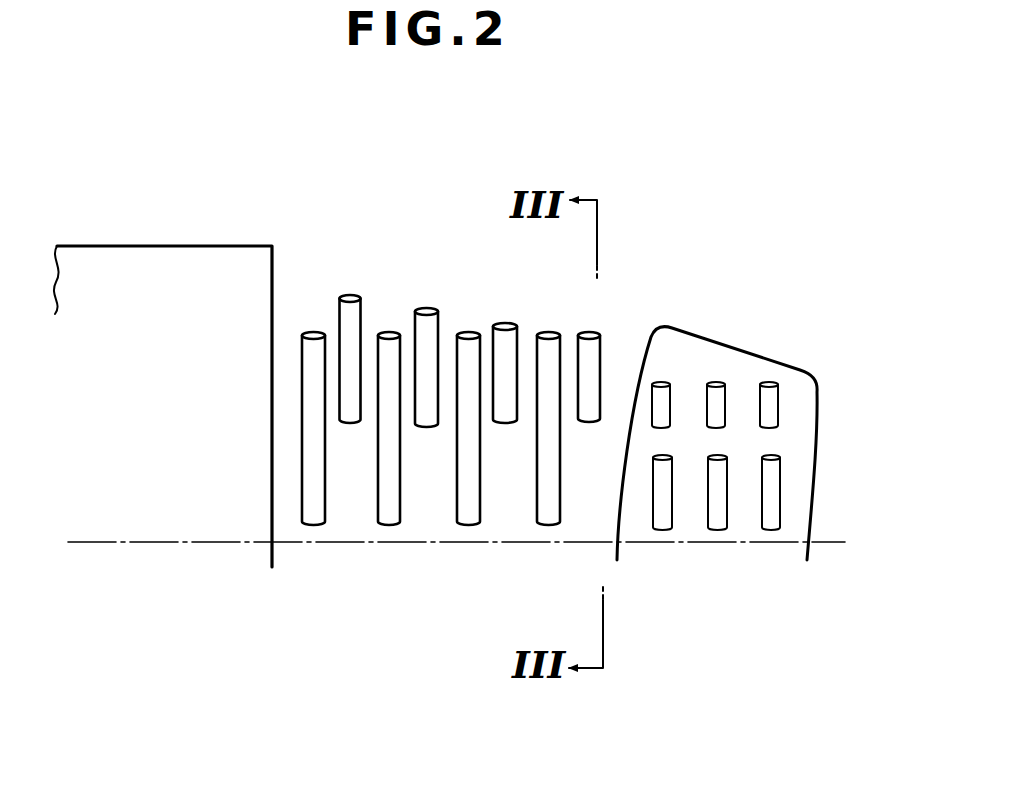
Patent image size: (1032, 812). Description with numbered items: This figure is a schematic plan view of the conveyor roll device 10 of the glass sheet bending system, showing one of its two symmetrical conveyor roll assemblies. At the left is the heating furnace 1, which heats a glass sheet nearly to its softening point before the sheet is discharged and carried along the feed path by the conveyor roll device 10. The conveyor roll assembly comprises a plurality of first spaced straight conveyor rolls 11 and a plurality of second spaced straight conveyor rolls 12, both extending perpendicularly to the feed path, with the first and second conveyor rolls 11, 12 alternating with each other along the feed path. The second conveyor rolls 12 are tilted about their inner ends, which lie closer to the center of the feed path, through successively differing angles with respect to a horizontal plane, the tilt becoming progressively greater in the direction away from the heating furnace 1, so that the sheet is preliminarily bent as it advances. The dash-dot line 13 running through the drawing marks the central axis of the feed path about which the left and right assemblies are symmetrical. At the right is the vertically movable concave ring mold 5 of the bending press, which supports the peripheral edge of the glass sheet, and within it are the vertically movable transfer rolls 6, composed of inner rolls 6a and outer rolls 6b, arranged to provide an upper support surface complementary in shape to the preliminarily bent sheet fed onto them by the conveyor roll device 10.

The heating furnace 1 is at (157, 266).
The ring mold 5 is at (790, 375).
The transfer rolls 6 is at (790, 471).
The inner rolls 6a is at (768, 517).
The outer rolls 6b is at (768, 407).
The conveyor roll device 10 is at (338, 243).
The first conveyor rolls 11 is at (315, 523).
The second conveyor rolls 12 is at (590, 336).
The center line 13 is at (203, 540).